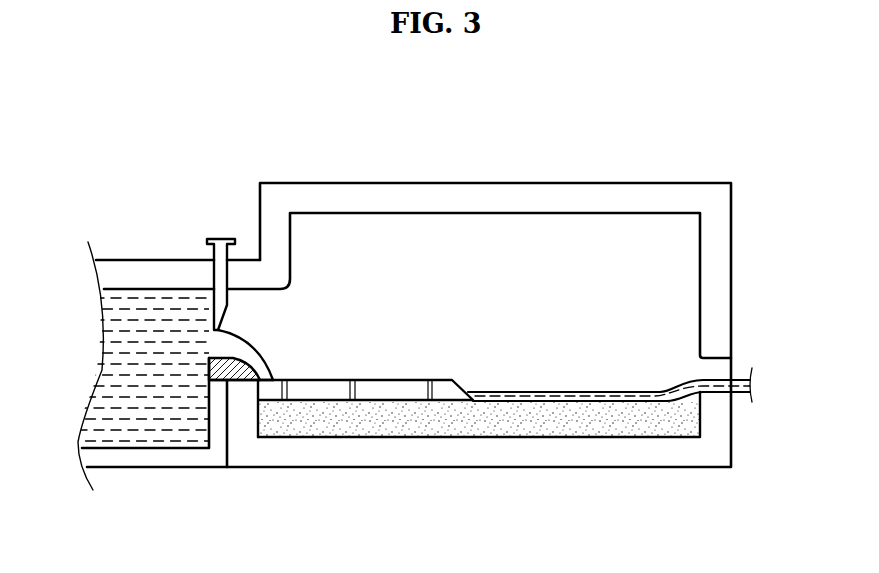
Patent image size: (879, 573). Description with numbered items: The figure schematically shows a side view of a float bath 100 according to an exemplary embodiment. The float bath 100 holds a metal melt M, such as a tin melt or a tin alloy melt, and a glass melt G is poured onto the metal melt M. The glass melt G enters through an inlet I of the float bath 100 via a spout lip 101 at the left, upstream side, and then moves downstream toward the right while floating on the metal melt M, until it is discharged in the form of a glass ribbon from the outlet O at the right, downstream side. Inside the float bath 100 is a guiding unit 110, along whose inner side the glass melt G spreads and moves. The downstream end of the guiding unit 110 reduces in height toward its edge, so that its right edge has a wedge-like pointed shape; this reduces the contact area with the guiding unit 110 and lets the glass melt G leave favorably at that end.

The float bath 100 is at (488, 170).
The spout lip 101 is at (242, 380).
The guiding unit 110 is at (380, 380).
The glass melt G is at (507, 393).
The metal melt M is at (590, 417).
The inlet I is at (230, 330).
The outlet O is at (740, 364).